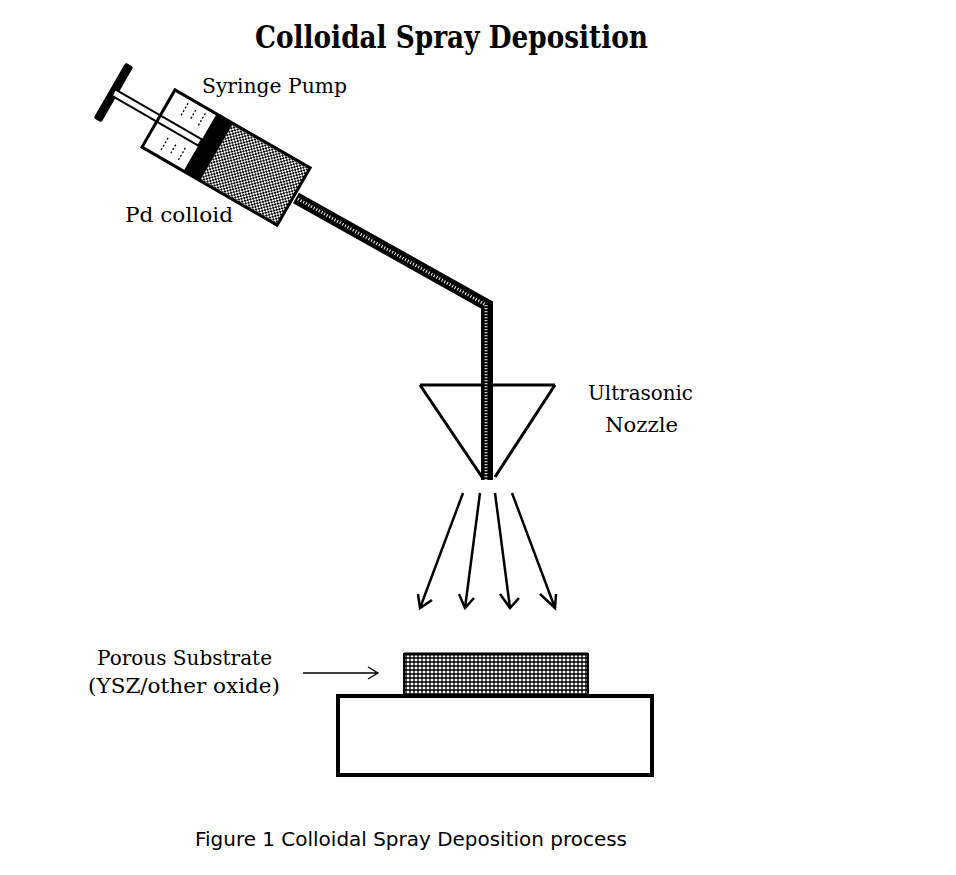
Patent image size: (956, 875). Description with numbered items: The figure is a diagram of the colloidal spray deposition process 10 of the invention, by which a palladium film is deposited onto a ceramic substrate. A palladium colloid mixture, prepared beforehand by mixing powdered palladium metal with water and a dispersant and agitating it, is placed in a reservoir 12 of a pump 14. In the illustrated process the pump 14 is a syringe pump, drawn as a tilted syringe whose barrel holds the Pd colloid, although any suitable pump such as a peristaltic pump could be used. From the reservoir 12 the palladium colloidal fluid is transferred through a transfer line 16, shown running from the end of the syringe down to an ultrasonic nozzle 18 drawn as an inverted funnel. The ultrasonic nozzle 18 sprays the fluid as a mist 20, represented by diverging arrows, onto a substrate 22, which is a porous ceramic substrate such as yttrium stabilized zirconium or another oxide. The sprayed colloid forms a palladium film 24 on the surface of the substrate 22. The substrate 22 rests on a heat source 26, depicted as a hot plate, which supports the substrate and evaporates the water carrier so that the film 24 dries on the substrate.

The process 10 is at (205, 483).
The reservoir 12 is at (263, 202).
The pump 14 is at (132, 145).
The transfer line 16 is at (433, 268).
The ultrasonic nozzle 18 is at (497, 437).
The mist 20 is at (507, 545).
The substrate 22 is at (583, 652).
The palladium film 24 is at (587, 675).
The heat source 26 is at (608, 747).